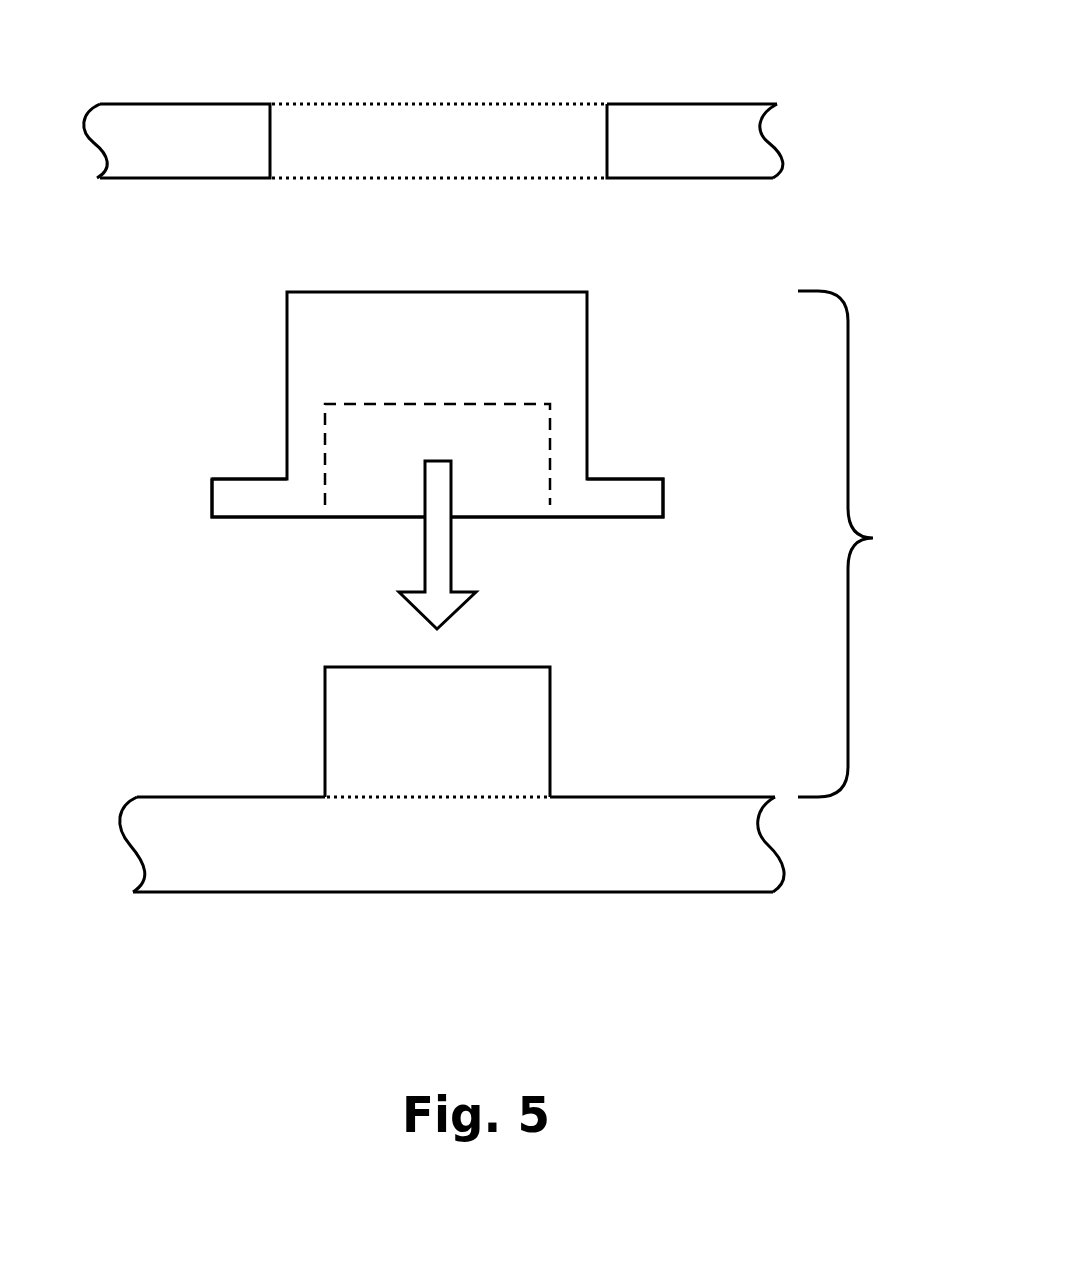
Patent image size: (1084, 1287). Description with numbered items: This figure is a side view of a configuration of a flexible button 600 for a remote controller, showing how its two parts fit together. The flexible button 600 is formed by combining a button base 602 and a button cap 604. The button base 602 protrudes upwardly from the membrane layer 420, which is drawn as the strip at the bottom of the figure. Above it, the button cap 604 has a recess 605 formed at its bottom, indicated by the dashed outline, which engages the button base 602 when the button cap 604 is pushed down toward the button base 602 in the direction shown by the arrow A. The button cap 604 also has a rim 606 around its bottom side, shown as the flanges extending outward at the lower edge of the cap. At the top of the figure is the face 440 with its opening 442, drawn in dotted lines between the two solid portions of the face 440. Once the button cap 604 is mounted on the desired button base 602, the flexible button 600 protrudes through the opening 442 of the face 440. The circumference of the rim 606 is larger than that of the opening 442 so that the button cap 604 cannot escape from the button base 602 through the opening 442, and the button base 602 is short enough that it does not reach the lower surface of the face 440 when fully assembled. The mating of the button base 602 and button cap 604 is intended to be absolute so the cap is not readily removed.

The face 440 is at (690, 142).
The opening 442 is at (436, 142).
The flexible button 600 is at (860, 544).
The button cap 604 is at (287, 330).
The recess 605 is at (517, 437).
The rim 606 is at (230, 479).
The arrow A is at (425, 553).
The button base 602 is at (363, 723).
The membrane layer 420 is at (455, 872).